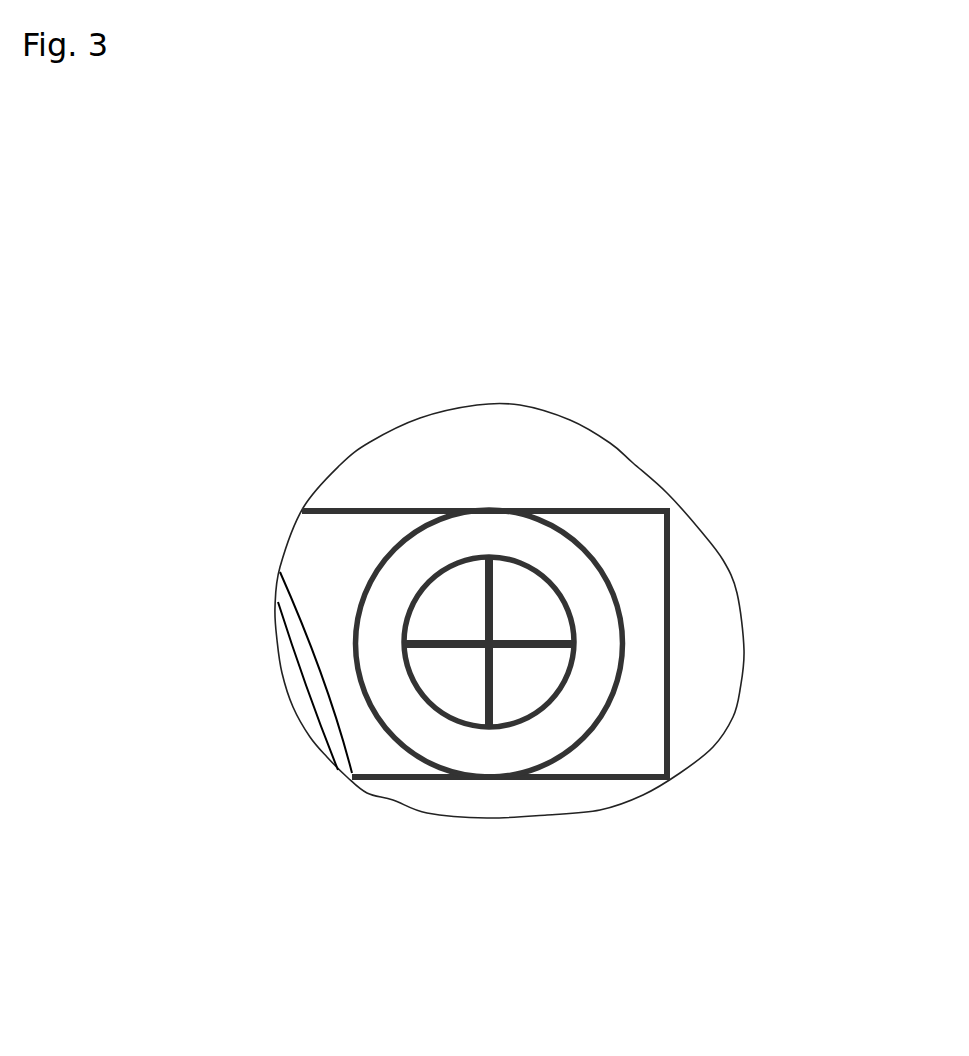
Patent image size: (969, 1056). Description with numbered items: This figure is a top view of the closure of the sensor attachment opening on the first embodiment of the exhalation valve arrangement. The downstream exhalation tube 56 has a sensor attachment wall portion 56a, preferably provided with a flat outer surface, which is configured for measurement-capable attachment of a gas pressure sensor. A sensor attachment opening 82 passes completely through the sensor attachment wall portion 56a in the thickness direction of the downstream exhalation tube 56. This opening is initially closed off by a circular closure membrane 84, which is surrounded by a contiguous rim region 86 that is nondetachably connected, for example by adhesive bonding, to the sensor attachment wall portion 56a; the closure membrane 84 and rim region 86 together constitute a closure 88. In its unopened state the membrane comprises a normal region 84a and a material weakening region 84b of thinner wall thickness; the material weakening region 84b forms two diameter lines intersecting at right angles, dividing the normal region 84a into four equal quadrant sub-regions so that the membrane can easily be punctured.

The downstream exhalation tube 56 is at (385, 468).
The sensor attachment wall portion 56a is at (316, 545).
The sensor attachment opening 82 is at (440, 550).
The closure membrane 84 is at (531, 592).
The normal region 84a is at (453, 617).
The material weakening region 84b is at (485, 614).
The rim region 86 is at (508, 540).
The closure 88 is at (570, 380).